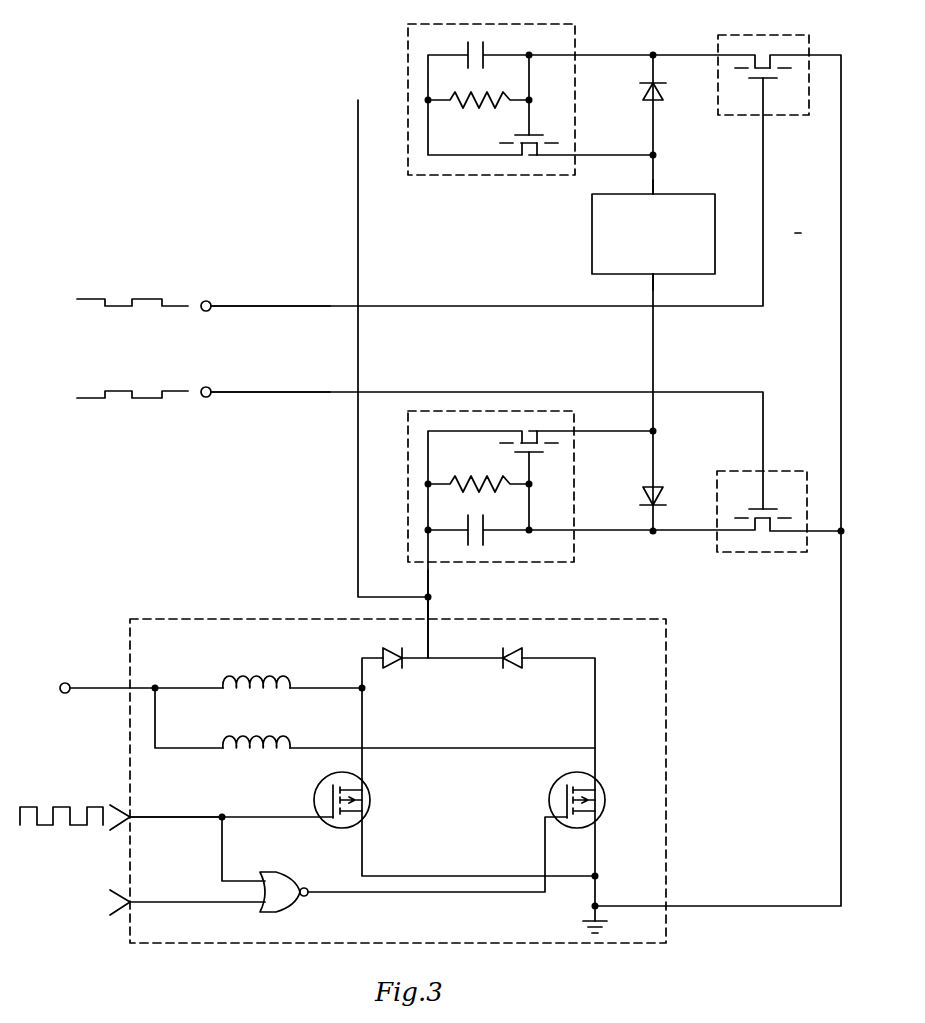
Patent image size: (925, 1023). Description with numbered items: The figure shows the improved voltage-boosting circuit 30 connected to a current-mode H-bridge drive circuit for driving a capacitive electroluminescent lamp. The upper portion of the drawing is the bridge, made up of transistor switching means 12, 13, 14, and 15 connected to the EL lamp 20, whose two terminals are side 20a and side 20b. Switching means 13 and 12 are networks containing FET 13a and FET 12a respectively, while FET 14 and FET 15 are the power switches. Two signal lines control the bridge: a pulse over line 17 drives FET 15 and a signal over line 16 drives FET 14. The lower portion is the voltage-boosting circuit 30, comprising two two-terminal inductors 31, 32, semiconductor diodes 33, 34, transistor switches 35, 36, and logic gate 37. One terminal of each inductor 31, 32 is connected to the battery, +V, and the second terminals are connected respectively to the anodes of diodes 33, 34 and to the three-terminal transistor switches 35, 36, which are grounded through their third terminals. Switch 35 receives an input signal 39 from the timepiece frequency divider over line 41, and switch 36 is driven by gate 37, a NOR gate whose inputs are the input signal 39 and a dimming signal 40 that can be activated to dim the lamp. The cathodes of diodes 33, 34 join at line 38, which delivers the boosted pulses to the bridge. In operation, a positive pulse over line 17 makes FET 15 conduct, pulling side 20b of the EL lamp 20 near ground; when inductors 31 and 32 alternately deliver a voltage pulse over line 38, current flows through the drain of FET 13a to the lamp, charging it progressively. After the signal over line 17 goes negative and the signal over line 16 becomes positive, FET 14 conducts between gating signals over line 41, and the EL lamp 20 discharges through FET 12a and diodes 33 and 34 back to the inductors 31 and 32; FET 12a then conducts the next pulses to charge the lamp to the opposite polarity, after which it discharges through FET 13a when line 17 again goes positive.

The transistor switching means 12 is at (408, 475).
The FET 12a is at (540, 455).
The transistor switching means 13 is at (408, 42).
The FET 13a is at (537, 134).
The FET 14 is at (773, 80).
The FET 15 is at (772, 508).
The line 16 is at (306, 306).
The line 17 is at (293, 396).
The EL lamp 20 is at (653, 234).
The side of the EL lamp 20a is at (653, 194).
The side of the EL lamp 20b is at (656, 275).
The voltage-boosting circuit 30 is at (180, 619).
The two-terminal inductor 31 is at (250, 674).
The two-terminal inductor 32 is at (270, 737).
The semiconductor diode 33 is at (388, 668).
The semiconductor diode 34 is at (515, 668).
The transistor switch 35 is at (316, 781).
The transistor switch 36 is at (600, 812).
The logic gate 37 is at (290, 912).
The line 38 is at (428, 576).
The input signal 39 is at (90, 828).
The dimming signal 40 is at (82, 916).
The line 41 is at (175, 816).